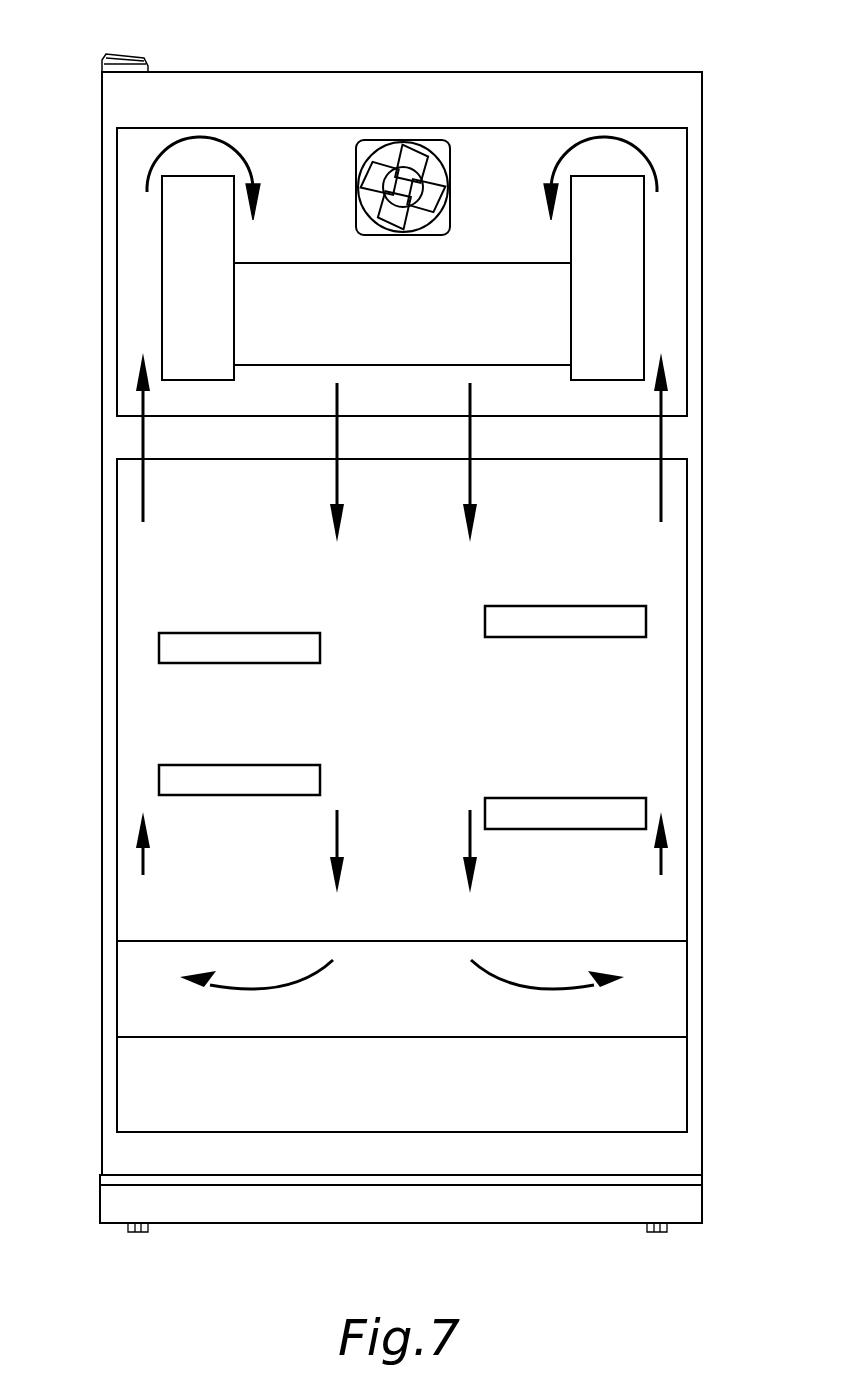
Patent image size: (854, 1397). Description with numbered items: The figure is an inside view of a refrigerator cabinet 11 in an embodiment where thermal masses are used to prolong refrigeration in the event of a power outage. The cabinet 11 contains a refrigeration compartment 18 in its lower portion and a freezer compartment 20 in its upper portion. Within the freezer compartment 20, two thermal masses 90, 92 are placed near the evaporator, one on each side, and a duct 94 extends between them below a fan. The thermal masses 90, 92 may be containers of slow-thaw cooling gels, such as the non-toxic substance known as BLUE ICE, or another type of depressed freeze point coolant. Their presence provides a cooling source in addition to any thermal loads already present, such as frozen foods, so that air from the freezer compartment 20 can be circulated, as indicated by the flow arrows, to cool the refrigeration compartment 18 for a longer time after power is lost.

The refrigerator cabinet 11 is at (424, 45).
The refrigeration compartment 18 is at (668, 576).
The freezer compartment 20 is at (667, 253).
The thermal mass 90 is at (173, 320).
The thermal mass 92 is at (625, 318).
The duct 94 is at (360, 270).